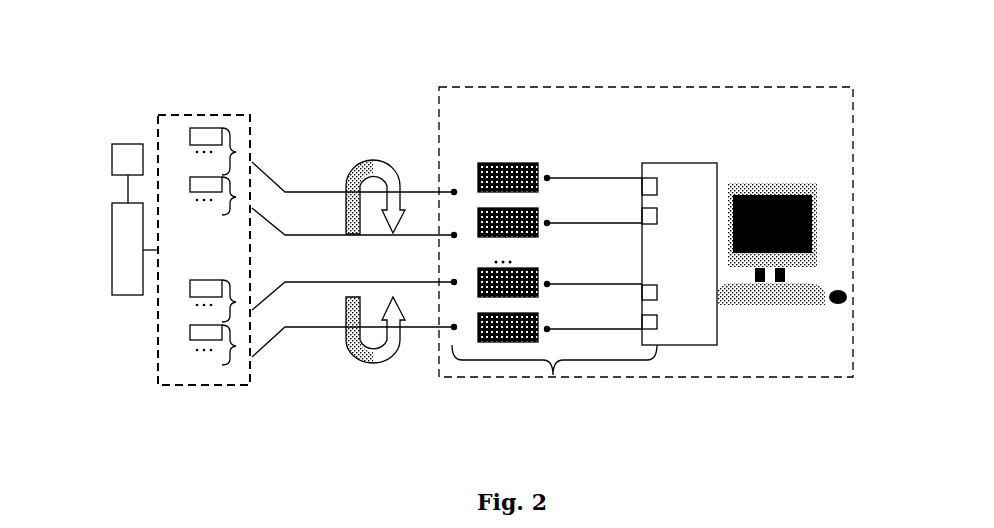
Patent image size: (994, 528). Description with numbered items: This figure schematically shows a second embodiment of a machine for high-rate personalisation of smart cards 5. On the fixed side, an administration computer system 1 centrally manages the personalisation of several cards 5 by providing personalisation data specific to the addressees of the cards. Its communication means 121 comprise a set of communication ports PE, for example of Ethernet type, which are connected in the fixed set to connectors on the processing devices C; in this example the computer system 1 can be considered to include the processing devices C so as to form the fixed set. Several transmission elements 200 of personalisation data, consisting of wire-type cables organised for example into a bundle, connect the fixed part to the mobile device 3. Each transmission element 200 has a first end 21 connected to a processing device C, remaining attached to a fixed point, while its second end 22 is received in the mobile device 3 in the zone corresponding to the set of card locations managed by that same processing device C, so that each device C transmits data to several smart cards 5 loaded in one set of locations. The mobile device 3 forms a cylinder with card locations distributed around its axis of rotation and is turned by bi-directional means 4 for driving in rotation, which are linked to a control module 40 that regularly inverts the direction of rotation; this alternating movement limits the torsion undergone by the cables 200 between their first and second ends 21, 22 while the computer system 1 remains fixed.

The administration computer system 1 is at (646, 262).
The mobile device 3 is at (202, 246).
The means for driving in rotation 4 is at (127, 290).
The smart cards 5 is at (195, 280).
The first end 21 is at (452, 180).
The second end 22 is at (255, 158).
The control module 40 is at (130, 143).
The communication means 121 is at (554, 252).
The transmission elements 200 is at (354, 227).
The processing devices C is at (512, 207).
The communication ports PE is at (652, 190).